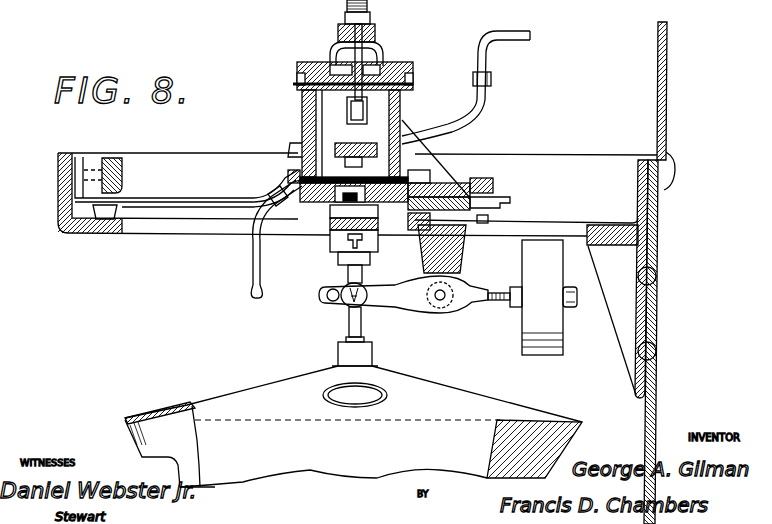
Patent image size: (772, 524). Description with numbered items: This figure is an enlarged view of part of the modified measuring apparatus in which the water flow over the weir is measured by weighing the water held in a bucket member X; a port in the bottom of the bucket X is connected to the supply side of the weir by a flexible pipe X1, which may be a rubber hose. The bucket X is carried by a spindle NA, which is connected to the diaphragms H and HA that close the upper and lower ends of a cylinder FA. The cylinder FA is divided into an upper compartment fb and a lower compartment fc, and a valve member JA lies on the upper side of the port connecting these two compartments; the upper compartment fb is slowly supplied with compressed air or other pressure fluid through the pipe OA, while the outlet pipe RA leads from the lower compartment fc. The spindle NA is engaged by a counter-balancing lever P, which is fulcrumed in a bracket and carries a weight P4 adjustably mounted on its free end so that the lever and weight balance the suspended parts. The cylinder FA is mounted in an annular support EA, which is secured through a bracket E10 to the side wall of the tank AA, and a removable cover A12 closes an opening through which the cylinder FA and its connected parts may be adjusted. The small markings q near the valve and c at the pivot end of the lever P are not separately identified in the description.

The removable cover A12 is at (670, 85).
The bracket E10 is at (658, 296).
The tank AA is at (656, 375).
The annular support EA is at (58, 178).
The upper compartment fb is at (122, 192).
The lower compartment fc is at (288, 158).
The diaphragm H is at (349, 101).
The port q is at (365, 128).
The cylinder FA is at (413, 93).
The valve member JA is at (398, 126).
The pipe OA is at (485, 106).
The flexible pipe X1 is at (492, 84).
The outlet pipe RA is at (263, 256).
The diaphragm HA is at (372, 258).
The spindle NA is at (348, 320).
The counter-balancing lever P is at (403, 309).
The pivot pin c is at (333, 295).
The weight P4 is at (532, 297).
The bucket member X is at (353, 414).